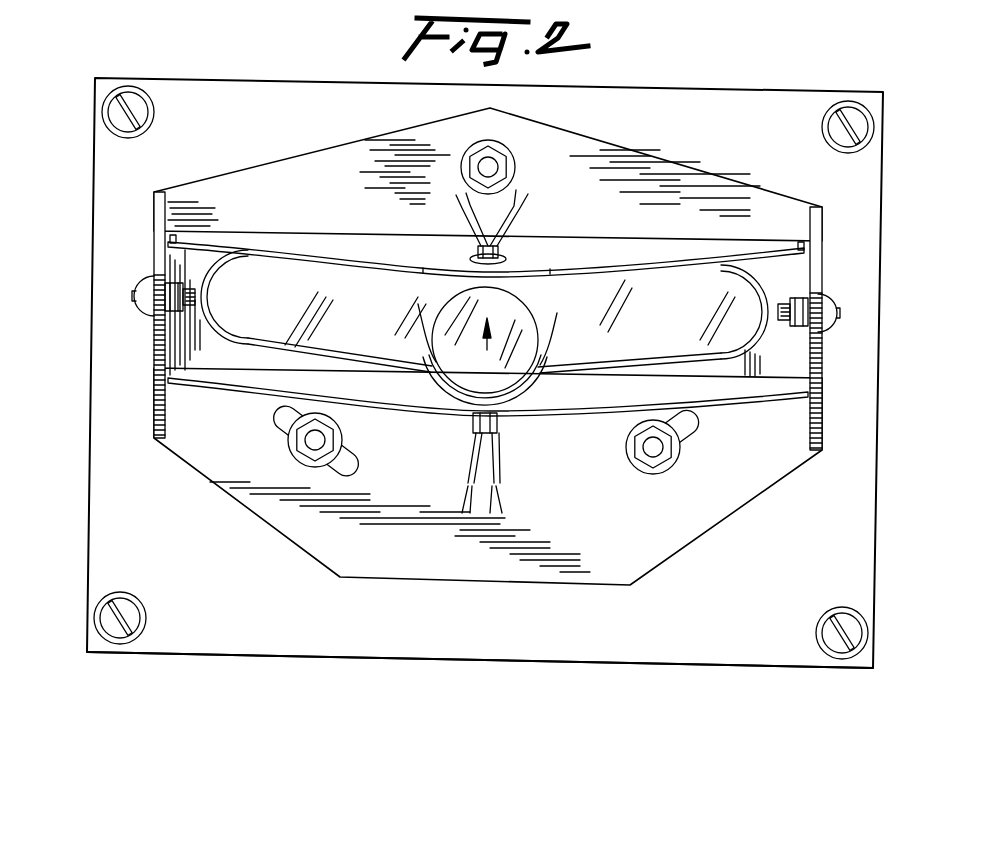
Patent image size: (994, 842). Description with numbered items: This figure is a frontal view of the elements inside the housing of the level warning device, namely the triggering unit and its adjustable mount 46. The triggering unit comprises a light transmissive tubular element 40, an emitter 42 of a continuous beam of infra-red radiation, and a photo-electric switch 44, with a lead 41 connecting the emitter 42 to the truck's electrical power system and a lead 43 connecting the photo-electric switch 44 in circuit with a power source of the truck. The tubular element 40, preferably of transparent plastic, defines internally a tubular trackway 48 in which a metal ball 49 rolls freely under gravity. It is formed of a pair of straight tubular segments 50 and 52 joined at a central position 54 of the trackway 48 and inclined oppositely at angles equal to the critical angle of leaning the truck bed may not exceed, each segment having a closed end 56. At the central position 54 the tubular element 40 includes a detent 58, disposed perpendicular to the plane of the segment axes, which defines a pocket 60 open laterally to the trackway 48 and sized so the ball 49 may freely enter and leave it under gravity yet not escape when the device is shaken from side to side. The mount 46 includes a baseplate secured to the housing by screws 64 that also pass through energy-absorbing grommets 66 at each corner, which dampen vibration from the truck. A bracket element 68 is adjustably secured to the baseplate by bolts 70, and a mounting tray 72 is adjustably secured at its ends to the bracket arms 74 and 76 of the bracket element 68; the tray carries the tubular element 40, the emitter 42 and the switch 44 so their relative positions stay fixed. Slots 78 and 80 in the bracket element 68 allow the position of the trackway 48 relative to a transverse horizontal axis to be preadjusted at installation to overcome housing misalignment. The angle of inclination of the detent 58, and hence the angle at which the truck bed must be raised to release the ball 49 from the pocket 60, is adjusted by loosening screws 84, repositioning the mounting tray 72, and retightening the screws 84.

The light transmissive tubular element 40 is at (762, 336).
The lead 41 is at (481, 488).
The emitter 42 is at (475, 425).
The lead 43 is at (505, 232).
The photo-electric switch 44 is at (500, 252).
The adjustable mount 46 is at (762, 116).
The tubular trackway 48 is at (613, 352).
The metal ball 49 is at (577, 282).
The tubular segment 50 is at (481, 348).
The tubular segment 52 is at (742, 300).
The central position 54 is at (487, 340).
The closed end 56 is at (226, 287).
The detent 58 is at (521, 395).
The pocket 60 is at (417, 378).
The screws 64 is at (838, 652).
The energy-absorbing grommets 66 is at (822, 645).
The bracket element 68 is at (600, 172).
The bolts 70 is at (505, 158).
The mounting tray 72 is at (233, 238).
The bracket arm 74 is at (155, 243).
The bracket arm 76 is at (822, 252).
The slot 78 is at (345, 474).
The slot 80 is at (686, 472).
The screws 84 is at (143, 303).